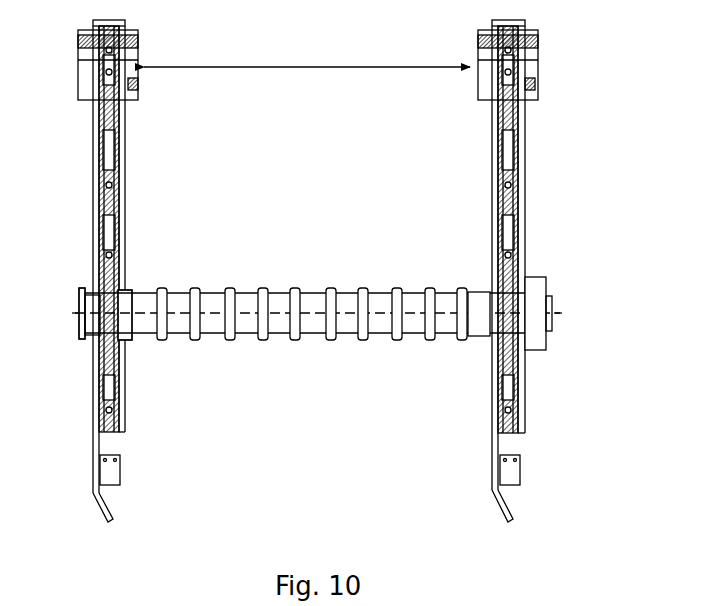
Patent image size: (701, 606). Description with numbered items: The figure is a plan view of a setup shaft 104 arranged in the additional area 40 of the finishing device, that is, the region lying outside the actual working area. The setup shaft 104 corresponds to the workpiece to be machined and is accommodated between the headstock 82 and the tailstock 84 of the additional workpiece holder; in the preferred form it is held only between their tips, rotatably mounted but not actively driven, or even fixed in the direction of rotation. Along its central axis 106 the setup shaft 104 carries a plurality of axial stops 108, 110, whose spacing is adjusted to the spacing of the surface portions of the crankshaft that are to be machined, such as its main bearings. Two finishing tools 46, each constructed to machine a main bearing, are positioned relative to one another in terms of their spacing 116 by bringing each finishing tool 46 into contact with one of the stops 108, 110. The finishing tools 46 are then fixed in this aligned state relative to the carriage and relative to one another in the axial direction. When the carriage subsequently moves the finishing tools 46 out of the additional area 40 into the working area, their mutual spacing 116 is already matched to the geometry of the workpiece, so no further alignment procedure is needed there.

The additional area 40 is at (321, 262).
The finishing tool 46 is at (137, 183).
The headstock 82 is at (53, 332).
The tailstock 84 is at (612, 332).
The setup shaft 104 is at (320, 269).
The axis 106 is at (243, 312).
The axial stop 108 is at (131, 292).
The axial stop 110 is at (490, 290).
The spacing 116 is at (397, 66).